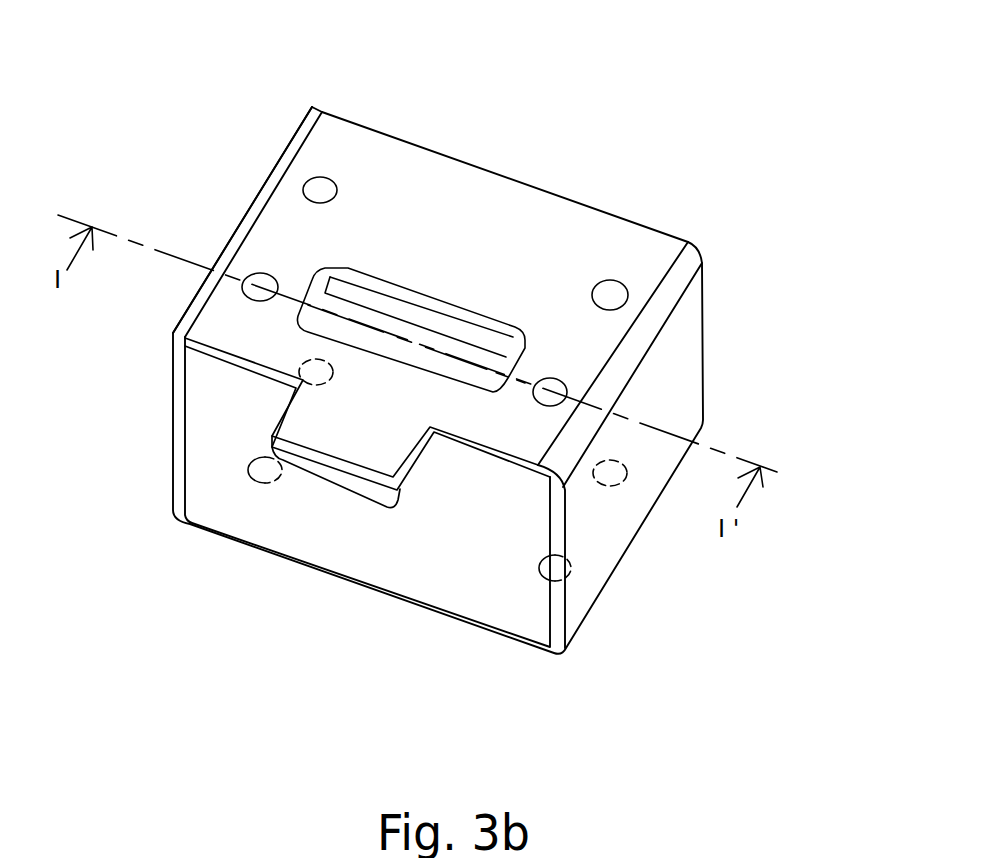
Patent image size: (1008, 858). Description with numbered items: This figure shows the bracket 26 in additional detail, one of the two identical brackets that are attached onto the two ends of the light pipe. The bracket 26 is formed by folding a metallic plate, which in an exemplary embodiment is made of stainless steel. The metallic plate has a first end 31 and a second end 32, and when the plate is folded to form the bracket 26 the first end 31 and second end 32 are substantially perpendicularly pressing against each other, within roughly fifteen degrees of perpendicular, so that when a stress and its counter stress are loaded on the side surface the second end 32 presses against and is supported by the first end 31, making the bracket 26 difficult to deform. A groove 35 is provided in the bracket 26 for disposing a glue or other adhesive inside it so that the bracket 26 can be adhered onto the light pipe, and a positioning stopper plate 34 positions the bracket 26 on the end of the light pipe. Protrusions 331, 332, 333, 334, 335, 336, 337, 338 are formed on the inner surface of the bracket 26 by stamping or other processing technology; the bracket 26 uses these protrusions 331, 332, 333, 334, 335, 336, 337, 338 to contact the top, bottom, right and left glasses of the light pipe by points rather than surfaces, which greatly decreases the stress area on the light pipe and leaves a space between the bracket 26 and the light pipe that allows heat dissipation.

The bracket 26 is at (752, 98).
The first end 31 is at (222, 258).
The second end 32 is at (250, 260).
The positioning stopper plate 34 is at (350, 492).
The groove 35 is at (433, 313).
The protrusion 331 is at (262, 472).
The protrusion 332 is at (548, 570).
The protrusion 333 is at (556, 395).
The protrusion 334 is at (258, 288).
The protrusion 335 is at (305, 370).
The protrusion 336 is at (618, 482).
The protrusion 337 is at (618, 295).
The protrusion 338 is at (326, 182).